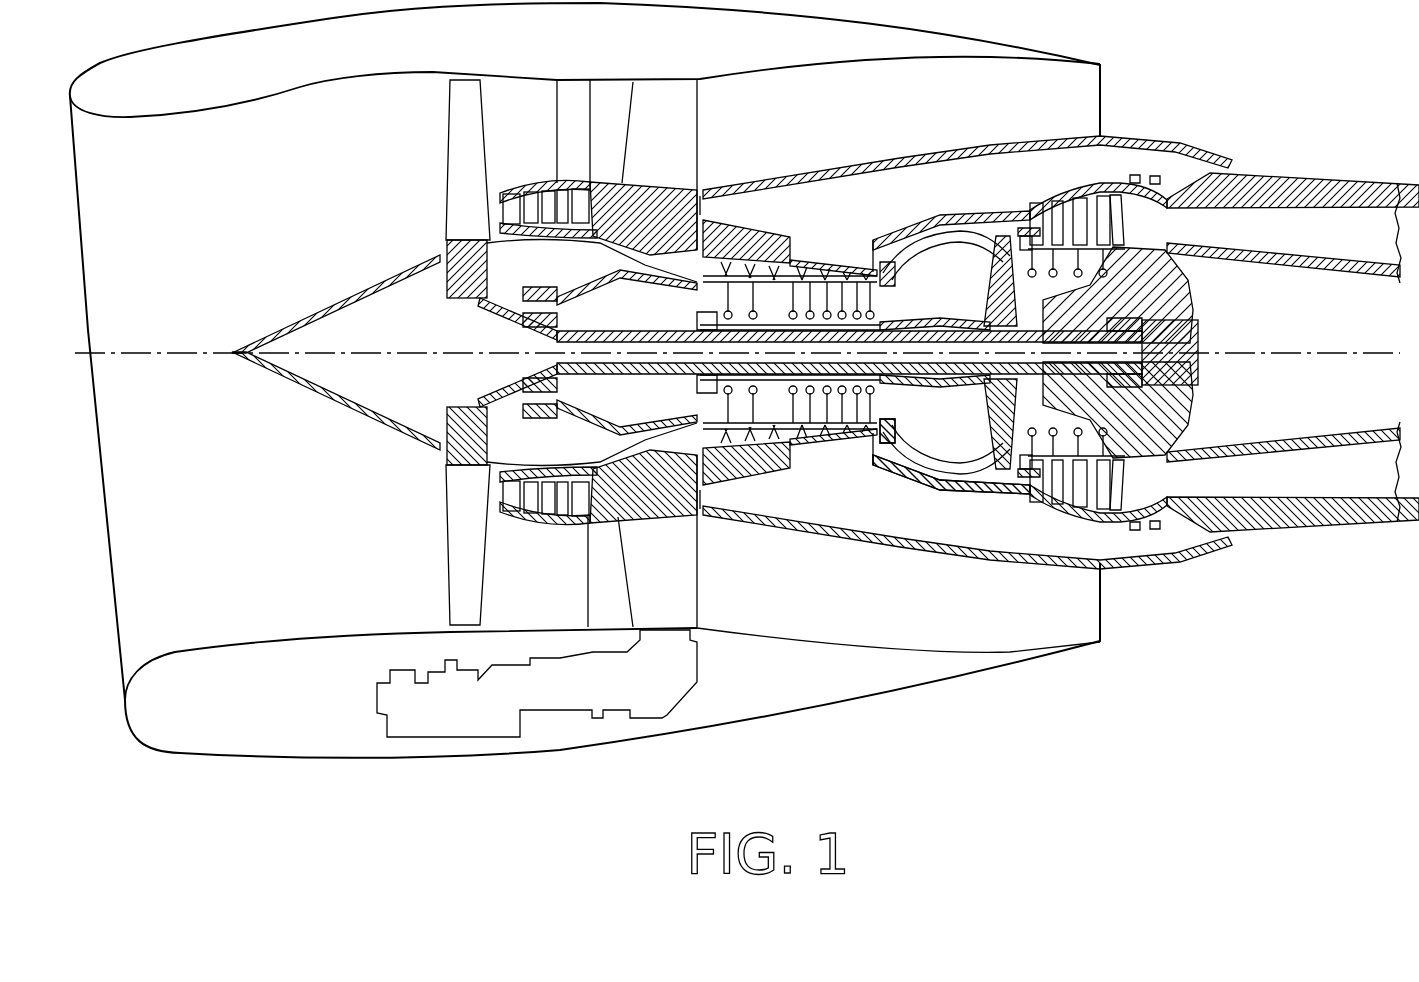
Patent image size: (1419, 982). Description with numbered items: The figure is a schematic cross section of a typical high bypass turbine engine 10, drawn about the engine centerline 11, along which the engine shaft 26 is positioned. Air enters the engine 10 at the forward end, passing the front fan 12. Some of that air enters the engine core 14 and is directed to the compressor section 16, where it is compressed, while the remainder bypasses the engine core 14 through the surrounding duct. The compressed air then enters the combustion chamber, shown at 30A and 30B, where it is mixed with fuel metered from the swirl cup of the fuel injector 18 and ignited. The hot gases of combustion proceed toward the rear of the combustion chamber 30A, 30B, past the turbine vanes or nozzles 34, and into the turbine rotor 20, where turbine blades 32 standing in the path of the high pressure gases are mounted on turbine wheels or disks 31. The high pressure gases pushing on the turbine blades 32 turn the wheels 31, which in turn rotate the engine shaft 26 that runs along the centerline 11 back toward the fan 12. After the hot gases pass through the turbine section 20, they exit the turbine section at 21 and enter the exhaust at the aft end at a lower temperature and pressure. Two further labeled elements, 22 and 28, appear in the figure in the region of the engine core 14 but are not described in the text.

The high bypass turbine engine 10 is at (1160, 97).
The centerline 11 is at (108, 340).
The front fan 12 is at (465, 523).
The engine core 14 is at (518, 530).
The compressor section 16 is at (805, 452).
The fuel injector 18 is at (920, 456).
The turbine rotor 20 is at (1020, 490).
The turbine section exit 21 is at (1135, 478).
The low pressure shaft 22 is at (960, 402).
The engine shaft 26 is at (967, 330).
The combustor dome 28 is at (935, 452).
The combustion chamber 30A is at (953, 473).
The combustion chamber 30B is at (940, 262).
The turbine wheels or disks 31 is at (1045, 497).
The turbine blades 32 is at (1023, 493).
The turbine vanes or nozzles 34 is at (982, 240).